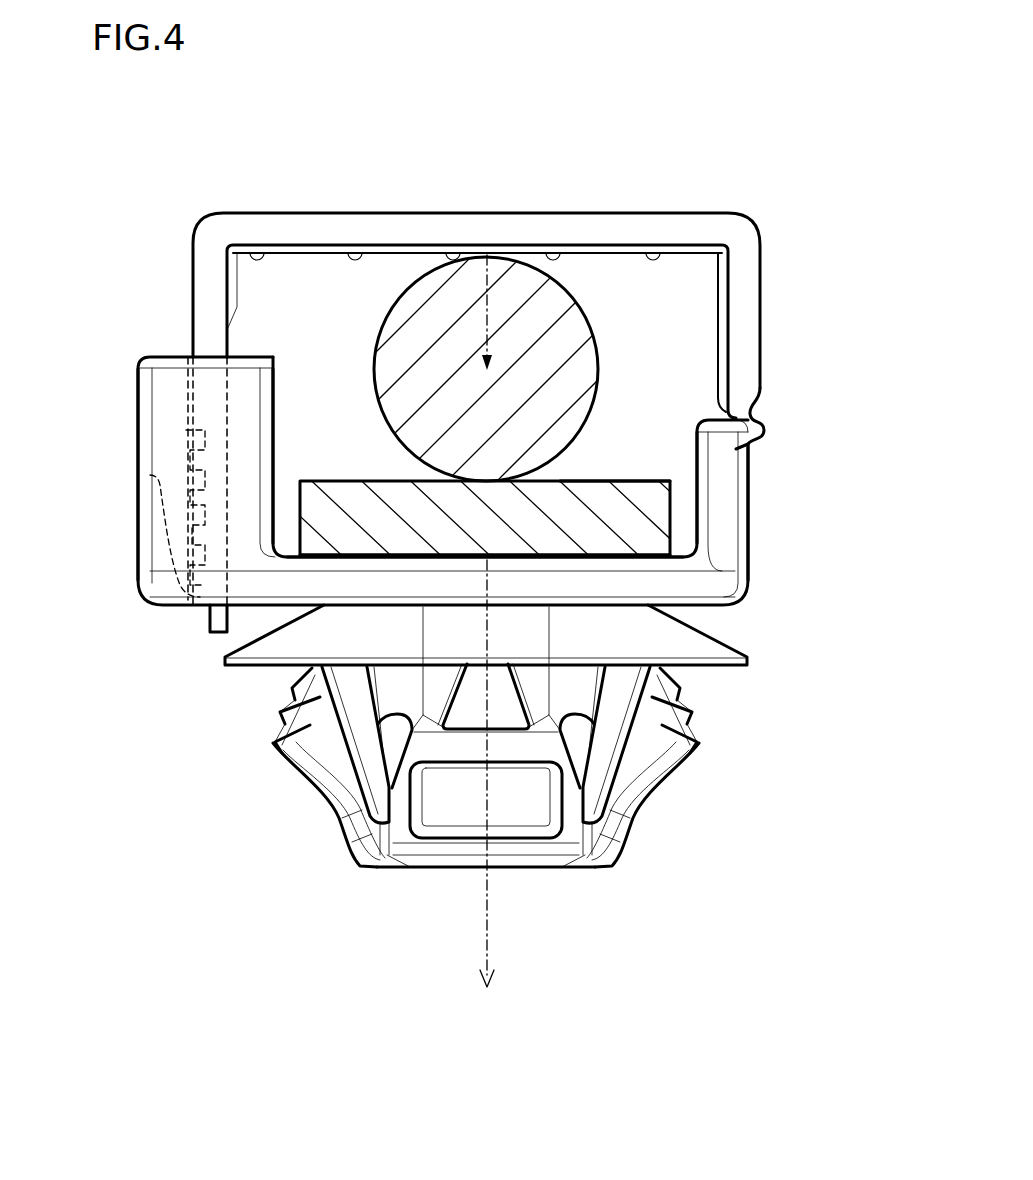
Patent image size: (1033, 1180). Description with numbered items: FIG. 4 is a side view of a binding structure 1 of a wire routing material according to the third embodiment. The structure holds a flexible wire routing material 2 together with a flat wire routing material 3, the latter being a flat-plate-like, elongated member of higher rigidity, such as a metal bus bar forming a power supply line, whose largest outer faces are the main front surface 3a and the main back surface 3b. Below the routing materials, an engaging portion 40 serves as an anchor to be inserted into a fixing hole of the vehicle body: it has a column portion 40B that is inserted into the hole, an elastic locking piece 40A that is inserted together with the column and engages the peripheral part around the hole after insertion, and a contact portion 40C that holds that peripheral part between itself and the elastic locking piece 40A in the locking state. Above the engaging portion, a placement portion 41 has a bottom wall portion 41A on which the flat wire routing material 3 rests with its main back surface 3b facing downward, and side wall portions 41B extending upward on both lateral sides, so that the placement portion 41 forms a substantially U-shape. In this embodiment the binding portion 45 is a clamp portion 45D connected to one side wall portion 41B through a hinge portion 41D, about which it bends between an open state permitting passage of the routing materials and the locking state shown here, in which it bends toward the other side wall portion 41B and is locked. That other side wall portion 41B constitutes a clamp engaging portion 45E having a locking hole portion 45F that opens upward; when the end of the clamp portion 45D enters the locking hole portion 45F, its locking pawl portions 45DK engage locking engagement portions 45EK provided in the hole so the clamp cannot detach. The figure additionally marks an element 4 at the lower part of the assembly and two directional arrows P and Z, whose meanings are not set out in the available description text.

The binding structure 1 is at (766, 100).
The flexible wire routing material 2 is at (560, 300).
The flat wire routing material 3 is at (590, 480).
The main front surface 3a is at (628, 478).
The main back surface 3b is at (570, 557).
The clip 4 is at (622, 872).
The engaging portion 40 is at (375, 878).
The elastic locking piece 40A is at (664, 758).
The column portion 40B is at (497, 752).
The contact portion 40C is at (270, 647).
The placement portion 41 is at (758, 570).
The bottom wall portion 41A is at (294, 580).
The side wall portion 41B is at (170, 432).
The hinge portion 41D is at (748, 404).
The binding portion 45 is at (767, 210).
The clamp portion 45D is at (403, 228).
The locking pawl portions 45DK is at (186, 430).
The clamp engaging portion 45E is at (725, 468).
The locking engagement portions 45EK is at (200, 518).
The locking hole portion 45F is at (188, 357).
The pressing direction P is at (490, 290).
The axial direction Z is at (487, 940).